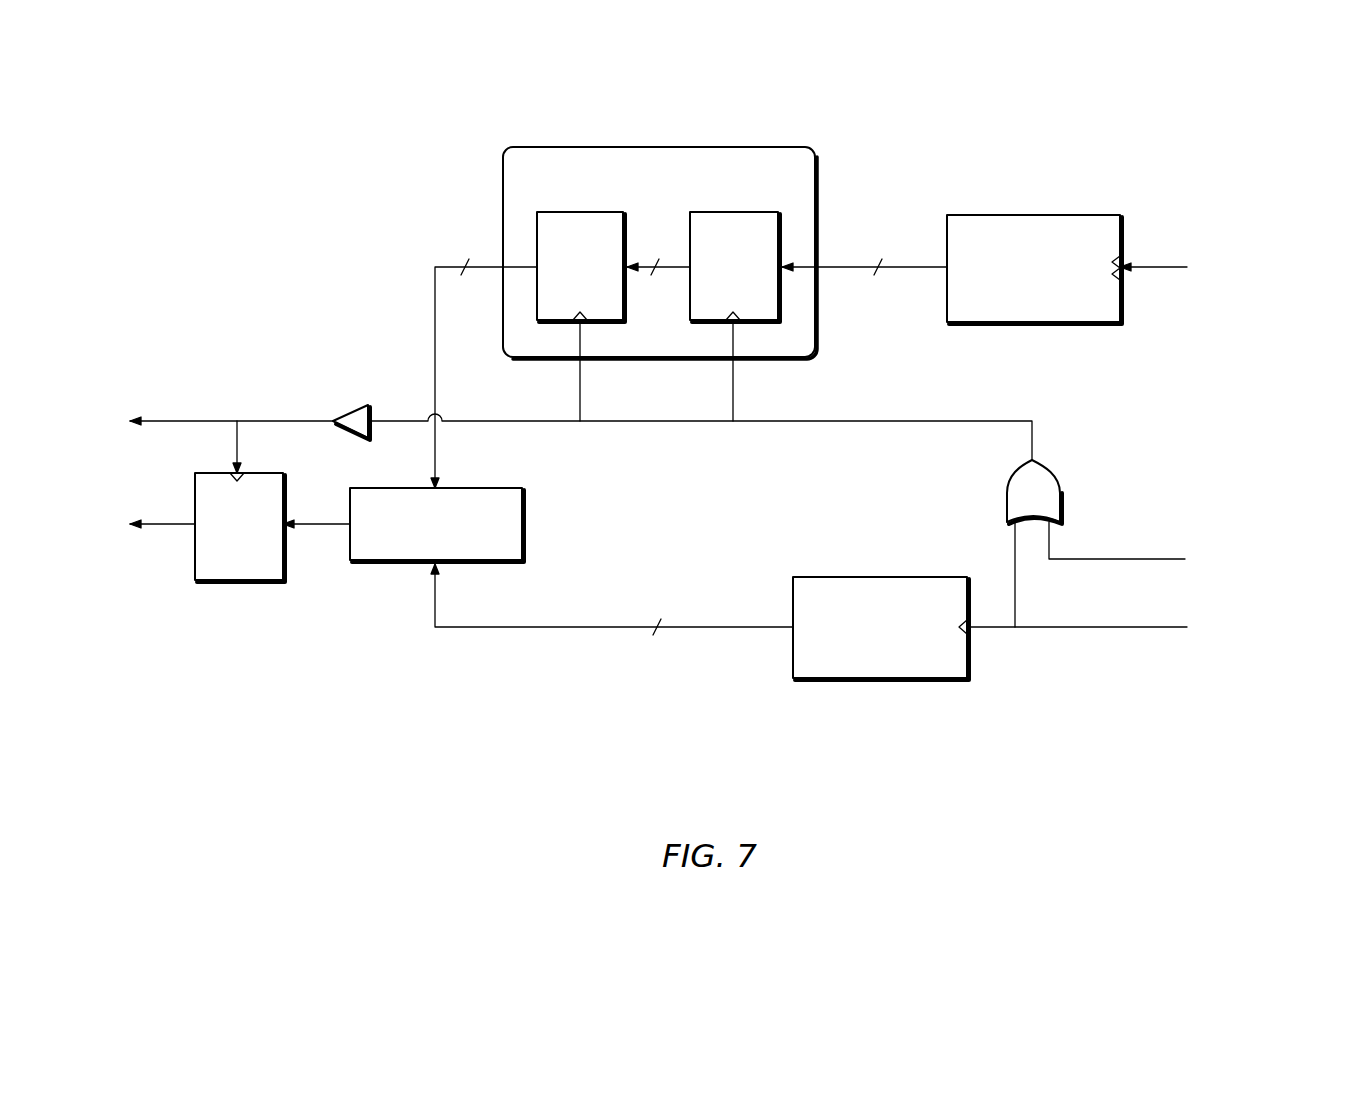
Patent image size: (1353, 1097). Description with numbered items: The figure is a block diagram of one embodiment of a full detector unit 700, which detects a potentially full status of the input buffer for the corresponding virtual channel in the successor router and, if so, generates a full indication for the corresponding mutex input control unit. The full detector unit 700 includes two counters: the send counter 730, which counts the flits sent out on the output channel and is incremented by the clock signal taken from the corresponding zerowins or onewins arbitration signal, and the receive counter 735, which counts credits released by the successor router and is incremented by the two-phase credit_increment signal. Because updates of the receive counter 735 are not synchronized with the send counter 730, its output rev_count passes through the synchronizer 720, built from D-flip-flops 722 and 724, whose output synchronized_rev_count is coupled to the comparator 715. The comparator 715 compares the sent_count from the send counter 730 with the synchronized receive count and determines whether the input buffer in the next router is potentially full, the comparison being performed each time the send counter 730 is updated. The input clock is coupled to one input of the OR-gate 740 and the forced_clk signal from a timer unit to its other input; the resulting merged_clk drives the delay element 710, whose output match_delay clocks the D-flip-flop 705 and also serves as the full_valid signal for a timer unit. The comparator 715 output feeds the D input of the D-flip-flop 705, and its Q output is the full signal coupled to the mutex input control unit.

The full detector unit 700 is at (916, 104).
The D-flip-flop 705 is at (245, 583).
The delay element 710 is at (352, 405).
The comparator 715 is at (482, 488).
The synchronizer 720 is at (795, 176).
The D-flip-flop 722 is at (752, 302).
The D-flip-flop 724 is at (598, 302).
The send counter 730 is at (875, 577).
The receive counter 735 is at (1025, 215).
The OR-gate 740 is at (1060, 500).